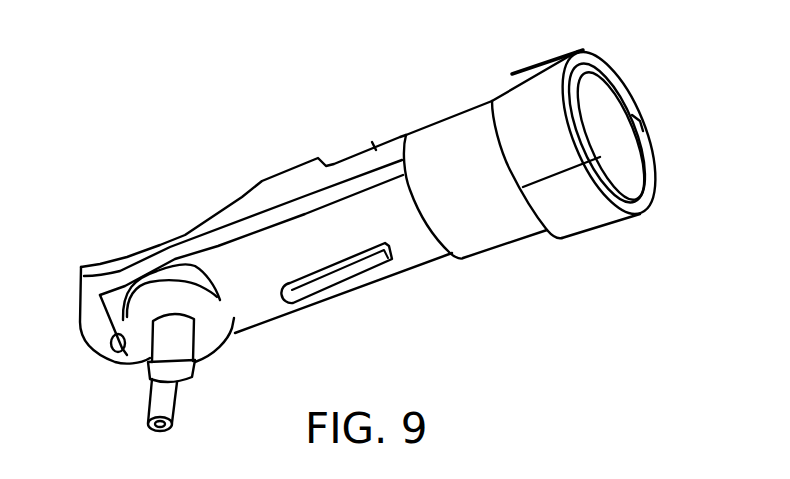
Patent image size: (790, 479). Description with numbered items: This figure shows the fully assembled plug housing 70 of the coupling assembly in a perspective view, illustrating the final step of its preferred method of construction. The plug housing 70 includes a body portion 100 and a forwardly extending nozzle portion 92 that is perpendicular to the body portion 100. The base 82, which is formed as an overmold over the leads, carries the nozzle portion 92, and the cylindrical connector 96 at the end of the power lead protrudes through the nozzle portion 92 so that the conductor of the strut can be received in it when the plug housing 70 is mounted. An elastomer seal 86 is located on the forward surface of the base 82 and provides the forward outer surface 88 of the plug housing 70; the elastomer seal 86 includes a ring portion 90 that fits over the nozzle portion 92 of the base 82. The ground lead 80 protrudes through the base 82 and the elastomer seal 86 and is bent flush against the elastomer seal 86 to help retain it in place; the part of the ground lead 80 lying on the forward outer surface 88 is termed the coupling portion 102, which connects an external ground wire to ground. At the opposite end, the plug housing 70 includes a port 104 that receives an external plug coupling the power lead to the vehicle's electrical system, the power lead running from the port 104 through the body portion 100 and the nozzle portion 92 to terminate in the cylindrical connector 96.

The plug housing 70 is at (538, 241).
The ground lead 80 is at (392, 260).
The base 82 is at (292, 173).
The elastomer seal 86 is at (258, 313).
The forward outer surface 88 is at (260, 252).
The ring portion 90 is at (138, 362).
The nozzle portion 92 is at (195, 363).
The cylindrical connector 96 is at (172, 405).
The body portion 100 is at (367, 200).
The coupling portion 102 is at (340, 275).
The port 104 is at (504, 94).